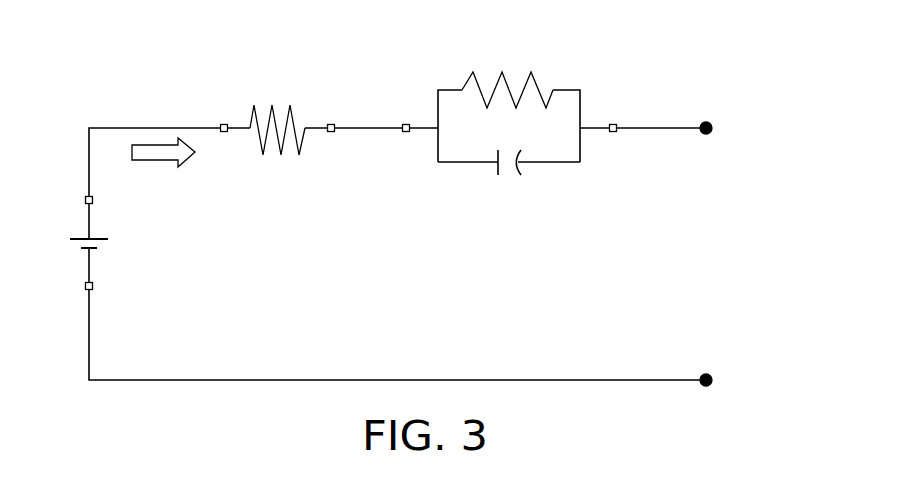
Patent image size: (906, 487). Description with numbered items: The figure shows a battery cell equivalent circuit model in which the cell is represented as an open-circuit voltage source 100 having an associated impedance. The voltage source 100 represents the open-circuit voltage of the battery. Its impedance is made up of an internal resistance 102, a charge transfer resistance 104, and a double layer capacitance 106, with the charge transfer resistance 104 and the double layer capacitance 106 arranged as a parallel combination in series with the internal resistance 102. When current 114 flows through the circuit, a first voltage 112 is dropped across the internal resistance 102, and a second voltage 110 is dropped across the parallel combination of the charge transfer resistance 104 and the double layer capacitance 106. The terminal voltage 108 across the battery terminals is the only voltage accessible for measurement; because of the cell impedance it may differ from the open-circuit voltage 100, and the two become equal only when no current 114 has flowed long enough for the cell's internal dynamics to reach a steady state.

The voltage source Voc 100 is at (100, 237).
The internal resistance r1 102 is at (248, 115).
The charge transfer resistance r2 104 is at (511, 118).
The double layer capacitance C 106 is at (495, 169).
The terminal voltage Vt 108 is at (715, 244).
The voltage V2 110 is at (495, 128).
The voltage V1 112 is at (282, 197).
The current 114 is at (145, 105).